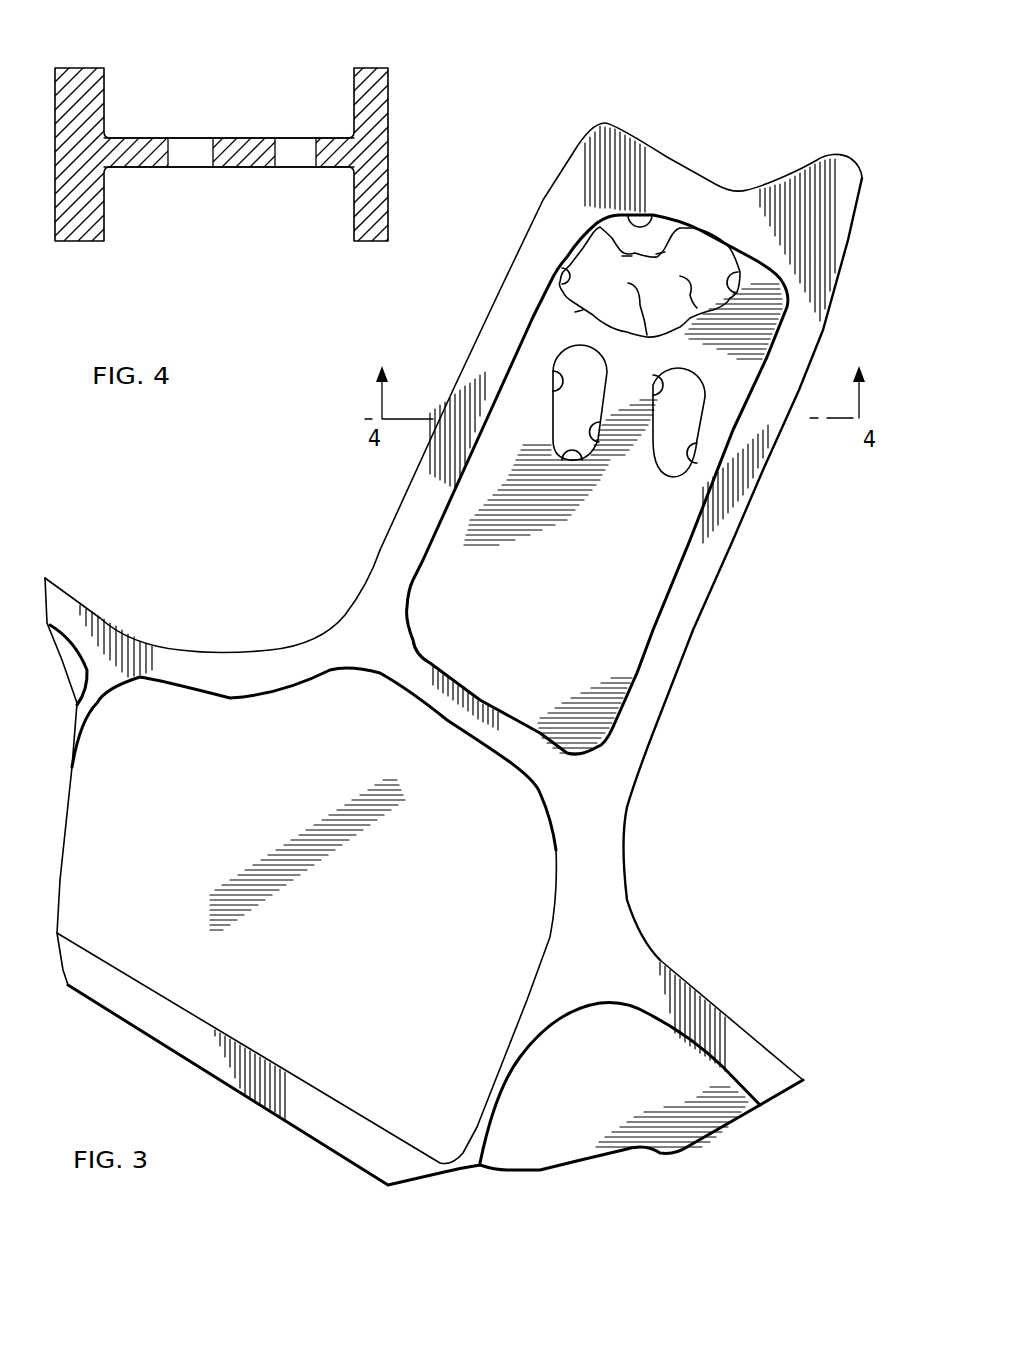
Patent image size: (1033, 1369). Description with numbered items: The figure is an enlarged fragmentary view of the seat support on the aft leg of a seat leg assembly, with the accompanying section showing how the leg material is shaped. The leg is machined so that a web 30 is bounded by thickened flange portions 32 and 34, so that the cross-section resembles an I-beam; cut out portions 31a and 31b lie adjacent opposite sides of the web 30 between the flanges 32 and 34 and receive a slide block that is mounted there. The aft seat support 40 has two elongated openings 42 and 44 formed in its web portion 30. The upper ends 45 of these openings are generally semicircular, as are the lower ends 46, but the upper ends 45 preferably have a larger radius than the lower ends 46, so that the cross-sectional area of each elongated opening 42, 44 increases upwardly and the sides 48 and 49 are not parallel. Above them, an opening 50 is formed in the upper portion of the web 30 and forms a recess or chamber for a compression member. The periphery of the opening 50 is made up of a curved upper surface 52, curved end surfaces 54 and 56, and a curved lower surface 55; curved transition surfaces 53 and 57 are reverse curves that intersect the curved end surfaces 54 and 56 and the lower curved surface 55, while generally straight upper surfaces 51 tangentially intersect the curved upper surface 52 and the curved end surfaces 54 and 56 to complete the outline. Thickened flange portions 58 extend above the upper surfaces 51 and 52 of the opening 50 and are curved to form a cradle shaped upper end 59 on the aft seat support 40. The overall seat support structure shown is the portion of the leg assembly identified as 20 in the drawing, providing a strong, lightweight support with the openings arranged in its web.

In FIG. 3, the seat track support bracket 20 is at (137, 1032).
In FIG. 4, the web 30 is at (240, 163).
In FIG. 3, the web 30 is at (443, 558).
In FIG. 4, the cut out portion 31a is at (125, 90).
In FIG. 4, the cut out portion 31b is at (313, 215).
In FIG. 4, the flange portion 32 is at (90, 228).
In FIG. 3, the flange portion 32 is at (423, 483).
In FIG. 4, the flange portion 34 is at (378, 125).
In FIG. 3, the flange portion 34 is at (690, 608).
In FIG. 3, the aft seat support 40 is at (650, 715).
In FIG. 4, the elongated opening 42 is at (178, 150).
In FIG. 3, the elongated opening 42 is at (568, 418).
In FIG. 4, the elongated opening 44 is at (278, 153).
In FIG. 3, the elongated opening 44 is at (680, 427).
In FIG. 3, the upper end 45 is at (705, 360).
In FIG. 3, the lower end 46 is at (562, 452).
In FIG. 3, the side 48 is at (662, 380).
In FIG. 3, the side 49 is at (588, 441).
In FIG. 3, the opening 50 is at (587, 247).
In FIG. 3, the upper surface 51 is at (643, 254).
In FIG. 3, the curved upper surface 52 is at (640, 225).
In FIG. 3, the curved transition surface 53 is at (575, 312).
In FIG. 3, the curved end surface 54 is at (566, 270).
In FIG. 3, the curved lower surface 55 is at (640, 305).
In FIG. 3, the curved end surface 56 is at (737, 295).
In FIG. 3, the curved transition surface 57 is at (697, 305).
In FIG. 3, the thickened flange portion 58 is at (640, 155).
In FIG. 3, the cradle shaped upper end 59 is at (745, 192).